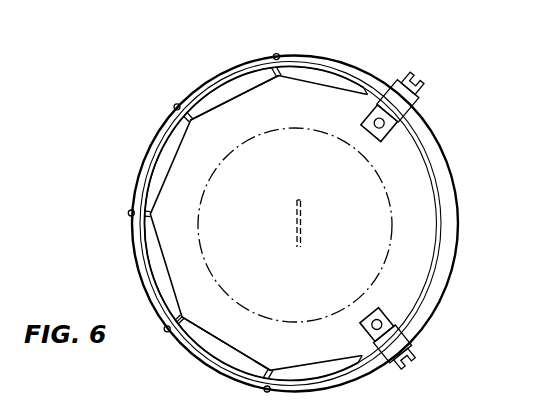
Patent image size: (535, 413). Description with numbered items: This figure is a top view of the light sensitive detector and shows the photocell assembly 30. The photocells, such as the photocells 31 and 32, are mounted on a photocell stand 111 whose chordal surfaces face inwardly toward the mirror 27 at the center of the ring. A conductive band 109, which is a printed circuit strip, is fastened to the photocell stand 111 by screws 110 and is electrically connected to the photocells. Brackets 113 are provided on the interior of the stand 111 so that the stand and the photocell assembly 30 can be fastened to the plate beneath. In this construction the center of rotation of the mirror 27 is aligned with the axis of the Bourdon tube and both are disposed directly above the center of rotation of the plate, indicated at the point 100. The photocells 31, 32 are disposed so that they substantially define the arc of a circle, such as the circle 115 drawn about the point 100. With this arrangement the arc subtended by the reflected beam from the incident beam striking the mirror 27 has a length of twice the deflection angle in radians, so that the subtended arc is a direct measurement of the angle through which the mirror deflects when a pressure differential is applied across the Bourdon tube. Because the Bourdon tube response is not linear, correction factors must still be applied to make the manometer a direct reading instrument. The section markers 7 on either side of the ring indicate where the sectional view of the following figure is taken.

The photocell assembly 30 is at (188, 56).
The photocell 31 is at (201, 133).
The photocell 32 is at (244, 346).
The conductive band 109 is at (314, 57).
The screws 110 is at (407, 354).
The photocell stand 111 is at (440, 289).
The brackets 113 is at (398, 143).
The circle 115 is at (189, 317).
The center of rotation 100 is at (302, 211).
The mirror 27 is at (300, 247).
The section line 7- 7 is at (95, 220).